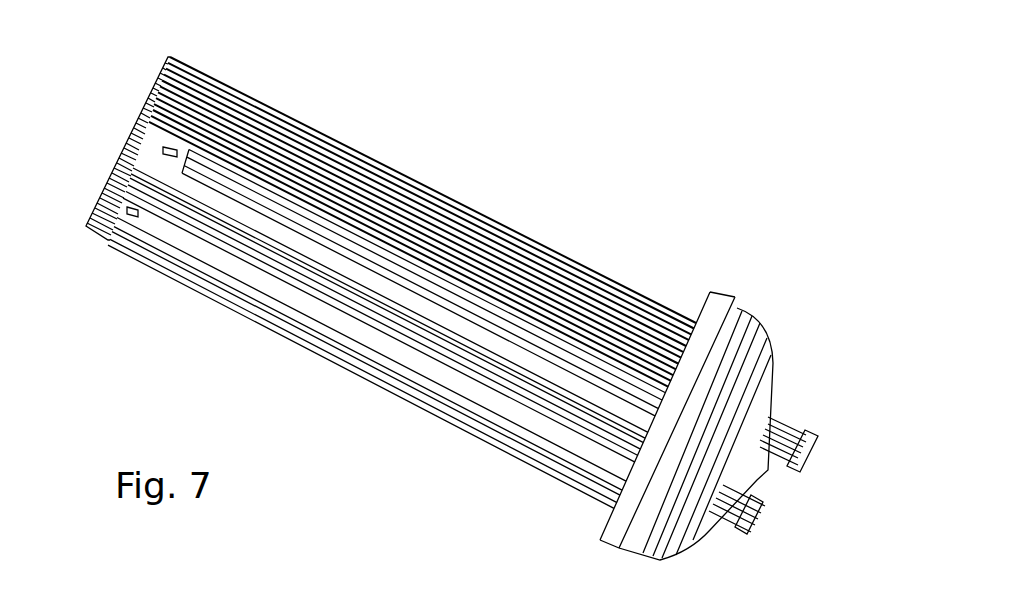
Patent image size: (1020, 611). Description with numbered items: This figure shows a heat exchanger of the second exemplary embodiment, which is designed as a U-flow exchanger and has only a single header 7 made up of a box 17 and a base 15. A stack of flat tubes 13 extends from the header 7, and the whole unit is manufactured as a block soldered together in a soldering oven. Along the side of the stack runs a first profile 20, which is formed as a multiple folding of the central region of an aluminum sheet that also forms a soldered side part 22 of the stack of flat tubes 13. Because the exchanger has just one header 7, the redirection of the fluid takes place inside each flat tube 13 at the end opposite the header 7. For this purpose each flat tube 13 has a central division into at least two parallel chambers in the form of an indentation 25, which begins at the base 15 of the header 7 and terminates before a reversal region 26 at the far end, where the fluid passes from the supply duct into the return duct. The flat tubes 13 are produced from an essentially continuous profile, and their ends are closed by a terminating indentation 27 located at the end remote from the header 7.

The header 7 is at (767, 322).
The flat tubes 13 is at (393, 172).
The base 15 is at (718, 290).
The box 17 is at (743, 333).
The first profile 20 is at (330, 300).
The side part 22 is at (247, 272).
The indentation 25 is at (250, 98).
The reversal region 26 is at (158, 142).
The terminating indentation 27 is at (101, 240).